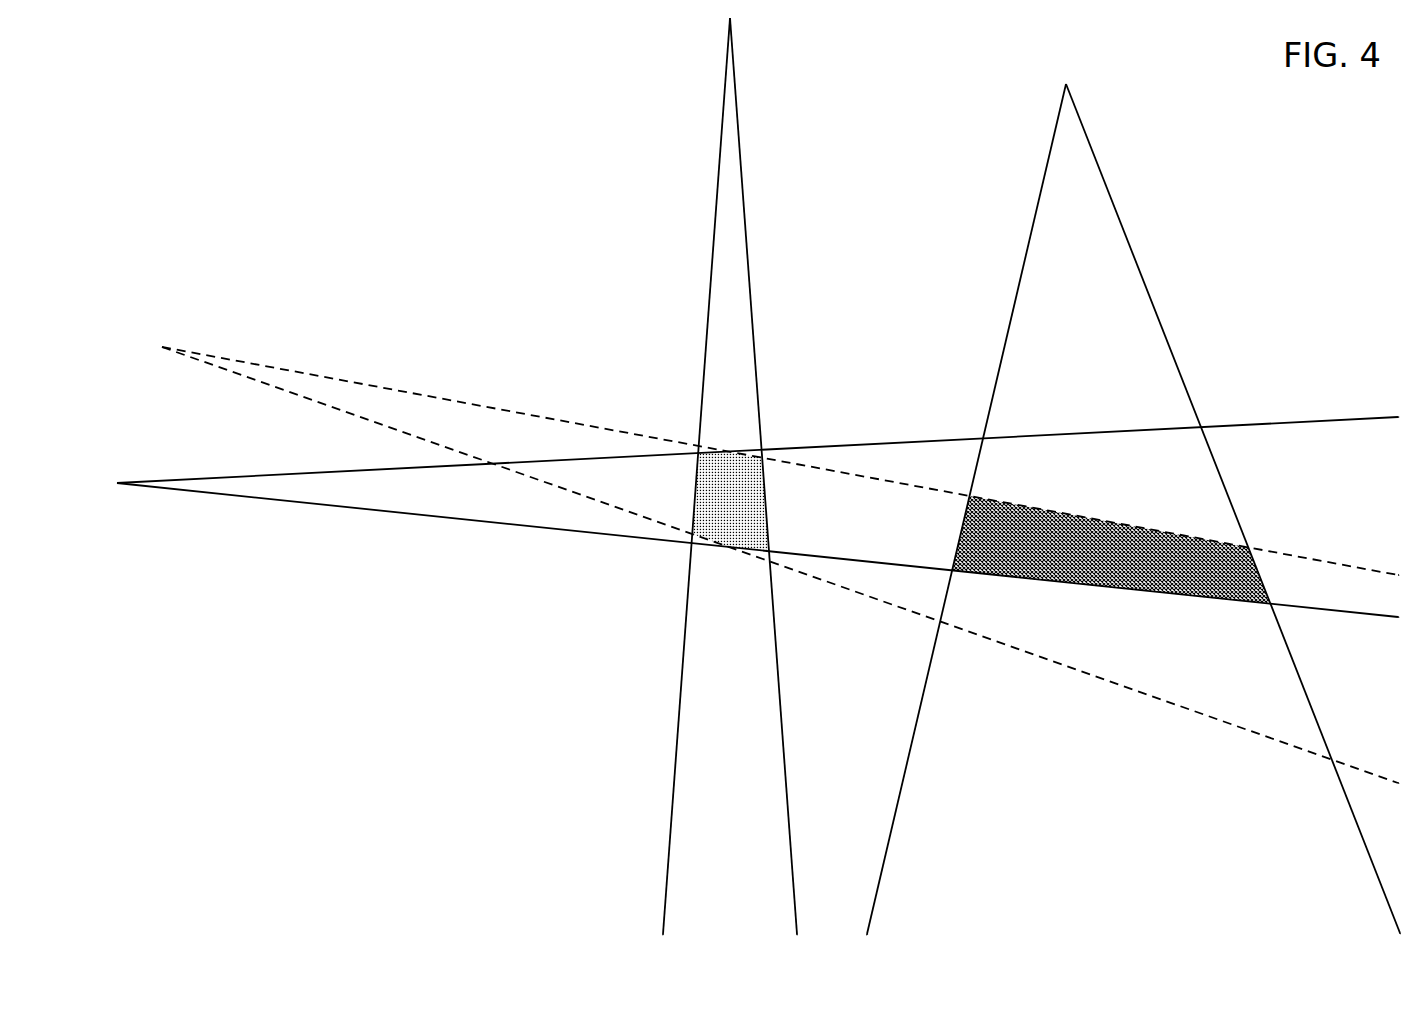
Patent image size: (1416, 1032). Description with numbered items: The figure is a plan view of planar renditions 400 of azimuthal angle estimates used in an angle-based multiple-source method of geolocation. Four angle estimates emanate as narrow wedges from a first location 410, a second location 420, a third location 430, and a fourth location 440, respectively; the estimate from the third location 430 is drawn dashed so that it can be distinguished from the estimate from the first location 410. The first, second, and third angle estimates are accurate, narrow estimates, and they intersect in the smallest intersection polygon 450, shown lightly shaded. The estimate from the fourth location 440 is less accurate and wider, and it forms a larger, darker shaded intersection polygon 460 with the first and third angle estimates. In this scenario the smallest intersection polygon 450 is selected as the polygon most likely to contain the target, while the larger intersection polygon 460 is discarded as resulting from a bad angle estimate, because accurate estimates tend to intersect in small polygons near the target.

The planar renditions 400 is at (391, 840).
The first location 410 is at (124, 500).
The second location 420 is at (716, 22).
The third location 430 is at (181, 334).
The fourth location 440 is at (1050, 88).
The smallest intersection polygon 450 is at (733, 508).
The intersection polygon 460 is at (1014, 561).